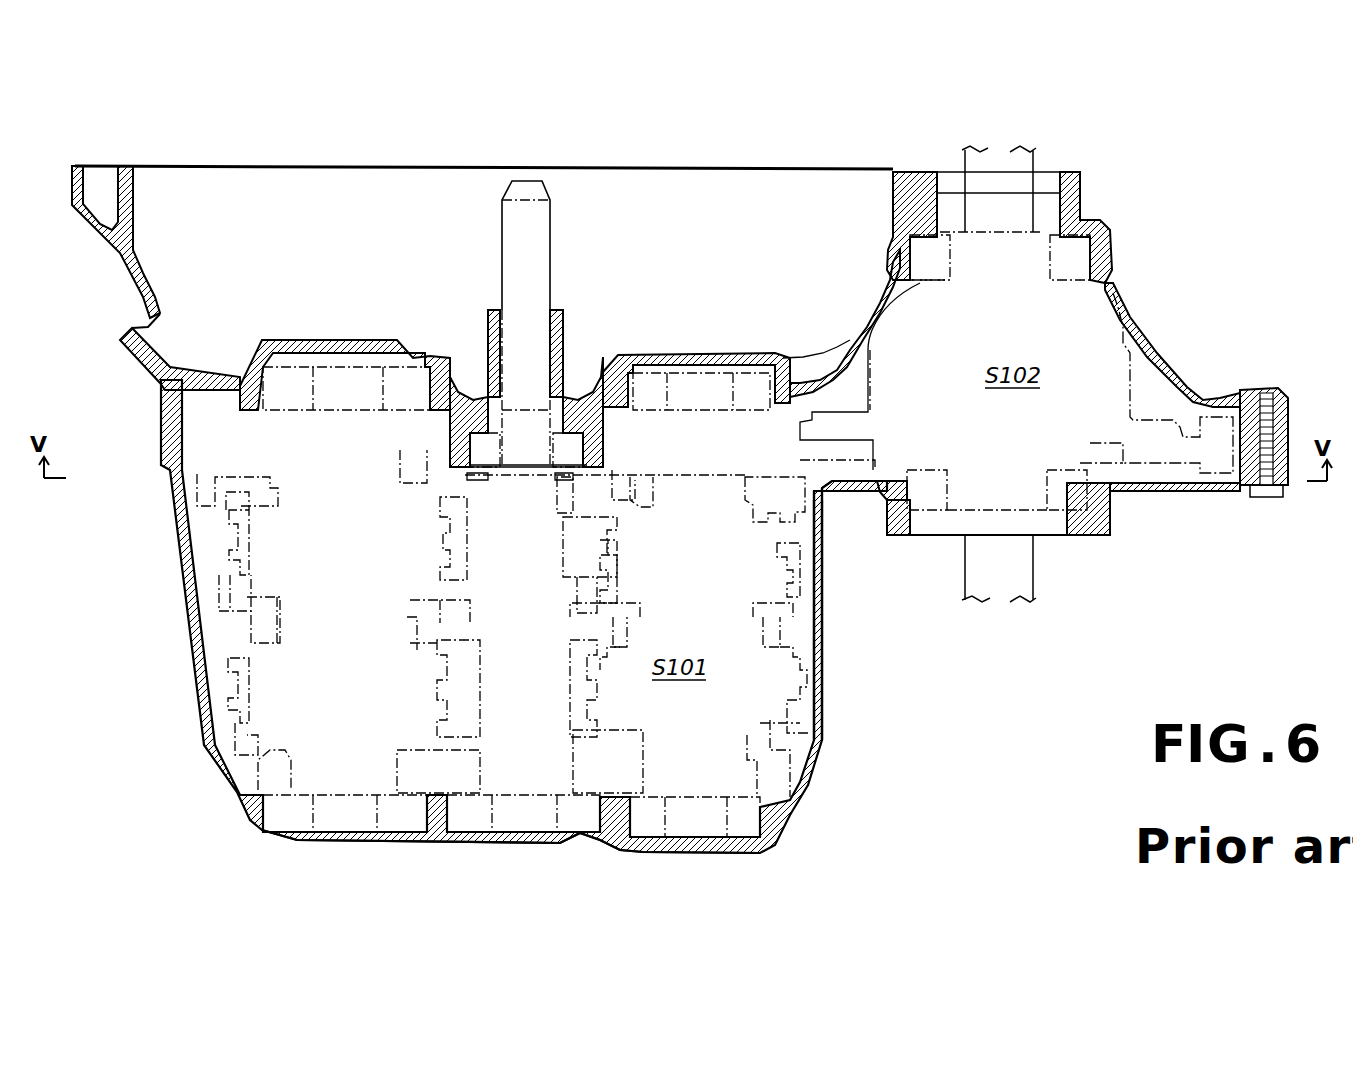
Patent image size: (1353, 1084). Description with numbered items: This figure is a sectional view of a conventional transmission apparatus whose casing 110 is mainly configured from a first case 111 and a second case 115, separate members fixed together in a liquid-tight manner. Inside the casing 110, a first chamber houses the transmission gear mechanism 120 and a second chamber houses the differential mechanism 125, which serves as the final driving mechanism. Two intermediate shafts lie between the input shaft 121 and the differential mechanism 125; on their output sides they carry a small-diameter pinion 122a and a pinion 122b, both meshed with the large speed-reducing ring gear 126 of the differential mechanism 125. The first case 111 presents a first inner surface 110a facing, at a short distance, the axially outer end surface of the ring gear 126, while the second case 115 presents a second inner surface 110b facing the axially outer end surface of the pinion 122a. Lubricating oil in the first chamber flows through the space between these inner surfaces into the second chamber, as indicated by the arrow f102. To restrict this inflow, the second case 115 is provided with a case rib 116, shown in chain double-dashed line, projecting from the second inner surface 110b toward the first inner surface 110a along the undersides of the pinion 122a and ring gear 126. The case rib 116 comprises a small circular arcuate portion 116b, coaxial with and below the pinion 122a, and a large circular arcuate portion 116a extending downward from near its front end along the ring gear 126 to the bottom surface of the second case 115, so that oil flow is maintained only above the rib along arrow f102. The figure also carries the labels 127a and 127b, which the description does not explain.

The casing 110 is at (891, 758).
The first case 111 is at (825, 710).
The transmission gear mechanism 120 is at (805, 631).
The input shaft 121 is at (552, 248).
The first inner surface 110a is at (883, 478).
The second inner surface 110b is at (603, 400).
The pinion 122a is at (760, 372).
The pinion 122b is at (270, 452).
The differential mechanism 125 is at (880, 330).
The lower shaft portion 127a is at (1036, 581).
The upper shaft portion 127b is at (1036, 158).
The second case 115 is at (1142, 328).
The ring gear 126 is at (1207, 412).
The case rib 116 is at (681, 480).
The large circular arcuate portion 116a is at (858, 497).
The small circular arcuate portion 116b is at (647, 480).
The arrow f102 is at (834, 468).